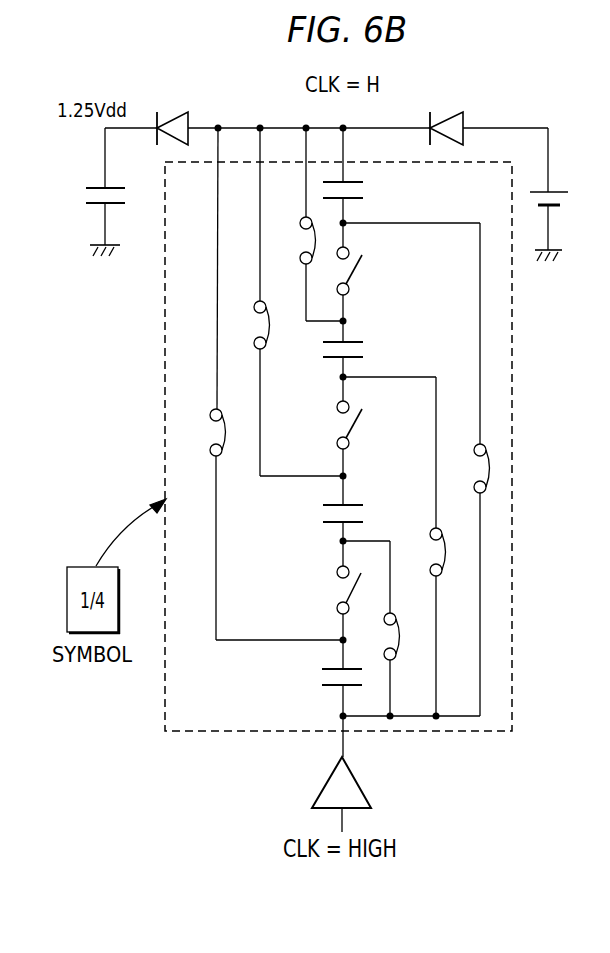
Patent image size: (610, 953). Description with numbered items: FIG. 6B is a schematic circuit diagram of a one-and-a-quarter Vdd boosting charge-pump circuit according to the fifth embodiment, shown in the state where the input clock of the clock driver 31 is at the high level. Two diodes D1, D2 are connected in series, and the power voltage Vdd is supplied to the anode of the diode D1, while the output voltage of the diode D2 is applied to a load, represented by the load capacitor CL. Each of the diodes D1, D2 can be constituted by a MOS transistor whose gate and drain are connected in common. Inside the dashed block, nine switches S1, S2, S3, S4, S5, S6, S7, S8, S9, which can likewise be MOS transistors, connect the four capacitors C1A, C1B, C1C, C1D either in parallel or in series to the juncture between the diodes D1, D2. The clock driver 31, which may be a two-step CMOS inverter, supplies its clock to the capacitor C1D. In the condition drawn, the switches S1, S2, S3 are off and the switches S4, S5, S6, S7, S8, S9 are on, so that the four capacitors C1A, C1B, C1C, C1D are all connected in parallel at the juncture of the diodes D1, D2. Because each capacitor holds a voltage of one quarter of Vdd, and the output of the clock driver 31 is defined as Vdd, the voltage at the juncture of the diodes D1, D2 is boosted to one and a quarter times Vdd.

The clock driver 31 is at (327, 780).
The diode D1 is at (446, 115).
The diode D2 is at (172, 115).
The load capacitor CL is at (120, 192).
The power voltage Vdd is at (565, 194).
The capacitor C1A is at (366, 192).
The capacitor C1B is at (366, 350).
The capacitor C1C is at (366, 514).
The capacitor C1D is at (316, 678).
The switch S1 is at (361, 271).
The switch S2 is at (361, 425).
The switch S3 is at (334, 590).
The switch S4 is at (467, 468).
The switch S5 is at (423, 552).
The switch S6 is at (379, 636).
The switch S7 is at (294, 240).
The switch S8 is at (248, 325).
The switch S9 is at (204, 432).